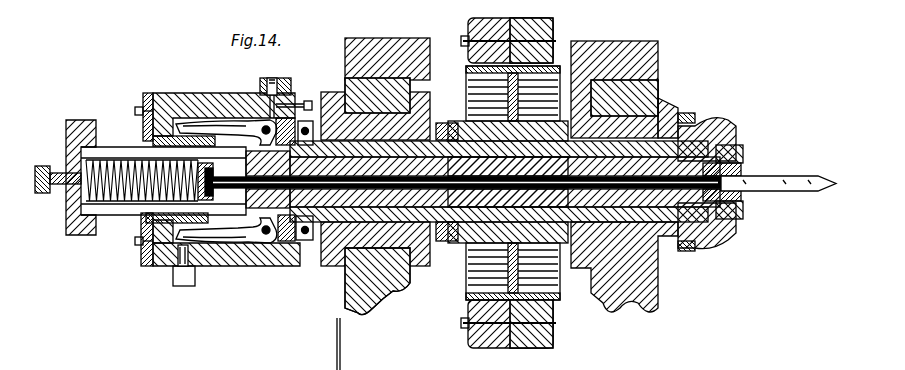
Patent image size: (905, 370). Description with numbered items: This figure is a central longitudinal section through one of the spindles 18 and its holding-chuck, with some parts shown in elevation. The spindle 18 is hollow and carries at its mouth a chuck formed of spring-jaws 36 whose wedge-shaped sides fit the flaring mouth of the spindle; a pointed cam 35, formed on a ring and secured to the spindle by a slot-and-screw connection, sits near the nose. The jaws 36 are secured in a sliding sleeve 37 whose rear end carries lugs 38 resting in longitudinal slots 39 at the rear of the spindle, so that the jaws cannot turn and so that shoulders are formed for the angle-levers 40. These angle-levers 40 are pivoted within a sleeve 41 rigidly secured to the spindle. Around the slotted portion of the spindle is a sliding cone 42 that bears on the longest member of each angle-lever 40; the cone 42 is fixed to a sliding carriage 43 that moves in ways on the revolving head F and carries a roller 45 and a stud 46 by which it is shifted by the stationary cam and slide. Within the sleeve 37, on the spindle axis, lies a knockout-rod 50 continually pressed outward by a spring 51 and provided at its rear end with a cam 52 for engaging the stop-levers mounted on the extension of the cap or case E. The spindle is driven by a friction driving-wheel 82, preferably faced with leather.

The spindle 18 is at (728, 125).
The cam 35 is at (693, 112).
The spring-jaws 36 is at (733, 147).
The sliding sleeve 37 is at (464, 181).
The lugs 38 is at (232, 143).
The longitudinal slots 39 is at (114, 141).
The angle-levers 40 is at (226, 181).
The sleeve 41 is at (292, 235).
The sliding cone 42 is at (133, 213).
The sliding carriage 43 is at (166, 88).
The roller 45 is at (253, 77).
The stud 46 is at (166, 272).
The knockout-rod 50 is at (508, 182).
The spring 51 is at (58, 201).
The cam 52 is at (33, 157).
The friction driving-wheel 82 is at (527, 340).
The cap or case E is at (624, 81).
The revolving head F is at (641, 277).